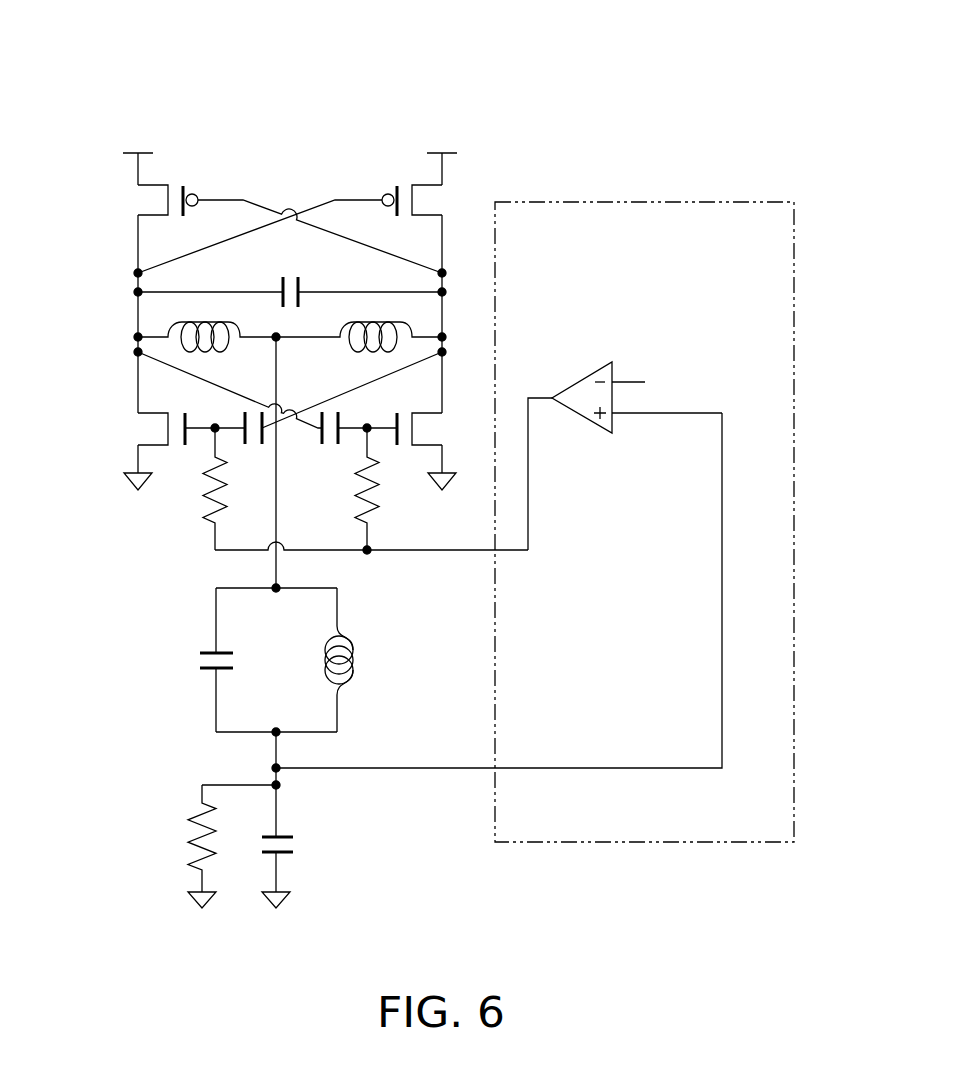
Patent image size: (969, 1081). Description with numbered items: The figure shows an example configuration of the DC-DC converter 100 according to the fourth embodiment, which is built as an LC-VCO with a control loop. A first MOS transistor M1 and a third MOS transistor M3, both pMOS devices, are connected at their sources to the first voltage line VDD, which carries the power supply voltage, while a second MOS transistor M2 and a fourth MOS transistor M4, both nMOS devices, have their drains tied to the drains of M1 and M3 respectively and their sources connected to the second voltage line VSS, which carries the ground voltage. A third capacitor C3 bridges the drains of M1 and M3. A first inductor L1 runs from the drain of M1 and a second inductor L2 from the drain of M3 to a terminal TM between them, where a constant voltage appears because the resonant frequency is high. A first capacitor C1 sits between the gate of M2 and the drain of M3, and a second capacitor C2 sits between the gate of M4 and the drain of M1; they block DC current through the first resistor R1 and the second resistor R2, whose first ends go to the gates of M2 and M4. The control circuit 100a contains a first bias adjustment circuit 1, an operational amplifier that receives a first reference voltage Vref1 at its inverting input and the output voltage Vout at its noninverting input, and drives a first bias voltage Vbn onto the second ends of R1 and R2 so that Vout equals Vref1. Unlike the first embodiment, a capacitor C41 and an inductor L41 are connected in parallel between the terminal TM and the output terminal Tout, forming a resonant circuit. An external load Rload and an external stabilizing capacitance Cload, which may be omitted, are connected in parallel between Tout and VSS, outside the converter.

The DC-DC converter 100 is at (94, 92).
The control circuit 100a is at (645, 201).
The first bias adjustment circuit 1 is at (582, 376).
The first MOS transistor M1 is at (159, 184).
The second MOS transistor M2 is at (150, 413).
The third MOS transistor M3 is at (422, 184).
The fourth MOS transistor M4 is at (428, 413).
The first capacitor C1 is at (242, 446).
The second capacitor C2 is at (343, 421).
The third capacitor C3 is at (281, 286).
The first inductor L1 is at (168, 336).
The second inductor L2 is at (412, 336).
The first resistor R1 is at (210, 482).
The second resistor R2 is at (356, 476).
The capacitor C41 is at (205, 652).
The inductor L41 is at (354, 655).
The terminal TM is at (280, 339).
The output terminal Tout is at (270, 768).
The output voltage Vout is at (281, 784).
The external load Rload is at (190, 818).
The external capacitance Cload is at (286, 834).
The first bias voltage Vbn is at (551, 474).
The first reference voltage Vref1 is at (663, 384).
The first voltage line VDD is at (288, 157).
The second voltage line VSS is at (289, 704).